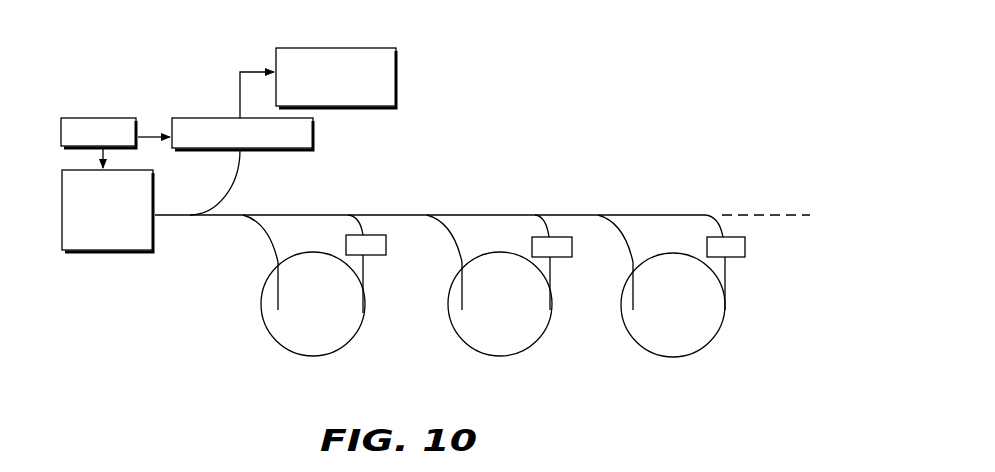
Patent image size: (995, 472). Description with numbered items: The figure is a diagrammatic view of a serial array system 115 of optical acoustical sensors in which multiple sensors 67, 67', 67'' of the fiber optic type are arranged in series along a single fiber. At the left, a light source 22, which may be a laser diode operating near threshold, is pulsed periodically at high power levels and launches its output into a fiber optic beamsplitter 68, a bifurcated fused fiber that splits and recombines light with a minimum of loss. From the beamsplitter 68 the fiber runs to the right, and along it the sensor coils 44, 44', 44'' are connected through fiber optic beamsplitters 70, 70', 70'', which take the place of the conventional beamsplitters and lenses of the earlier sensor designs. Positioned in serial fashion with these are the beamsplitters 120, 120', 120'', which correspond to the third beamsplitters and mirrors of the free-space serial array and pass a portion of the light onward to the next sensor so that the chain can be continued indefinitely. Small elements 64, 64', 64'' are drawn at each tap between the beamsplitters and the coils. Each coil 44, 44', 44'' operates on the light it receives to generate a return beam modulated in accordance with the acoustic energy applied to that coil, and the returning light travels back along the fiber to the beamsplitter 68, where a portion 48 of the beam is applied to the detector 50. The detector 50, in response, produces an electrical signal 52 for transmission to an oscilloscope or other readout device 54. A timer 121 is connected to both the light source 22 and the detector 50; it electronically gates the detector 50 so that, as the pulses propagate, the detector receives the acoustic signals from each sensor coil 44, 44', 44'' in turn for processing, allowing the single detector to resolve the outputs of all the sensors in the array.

The timer 121 is at (90, 118).
The detector 50 is at (203, 118).
The readout device 54 is at (356, 48).
The electrical signal 52 is at (253, 72).
The light source 22 is at (92, 252).
The portion of the beam 48 is at (221, 183).
The fiber optic beamsplitter 68 is at (176, 215).
The serial array system 115 is at (482, 140).
The fiber optic beamsplitter 70 is at (259, 239).
The fiber optic beamsplitter 70' is at (442, 239).
The fiber optic beamsplitter 70'' is at (615, 239).
The beamsplitter 120 is at (366, 202).
The beamsplitter 120' is at (539, 203).
The beamsplitter 120'' is at (718, 206).
The reflector/sensor element 1 64 is at (392, 274).
The reflector/sensor element 2 64' is at (579, 273).
The reflector/sensor element 3 64'' is at (757, 273).
The coil 44 is at (332, 304).
The coil 44' is at (528, 304).
The coil 44'' is at (700, 308).
The sensor 67 is at (244, 353).
The sensor 67' is at (477, 380).
The sensor 67'' is at (674, 380).